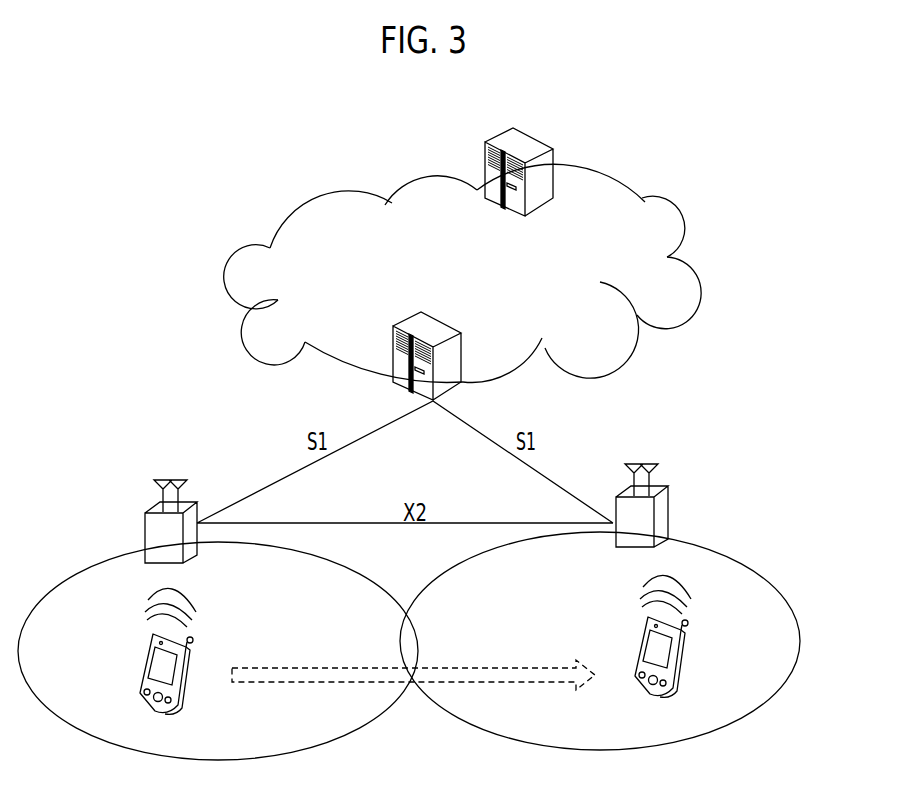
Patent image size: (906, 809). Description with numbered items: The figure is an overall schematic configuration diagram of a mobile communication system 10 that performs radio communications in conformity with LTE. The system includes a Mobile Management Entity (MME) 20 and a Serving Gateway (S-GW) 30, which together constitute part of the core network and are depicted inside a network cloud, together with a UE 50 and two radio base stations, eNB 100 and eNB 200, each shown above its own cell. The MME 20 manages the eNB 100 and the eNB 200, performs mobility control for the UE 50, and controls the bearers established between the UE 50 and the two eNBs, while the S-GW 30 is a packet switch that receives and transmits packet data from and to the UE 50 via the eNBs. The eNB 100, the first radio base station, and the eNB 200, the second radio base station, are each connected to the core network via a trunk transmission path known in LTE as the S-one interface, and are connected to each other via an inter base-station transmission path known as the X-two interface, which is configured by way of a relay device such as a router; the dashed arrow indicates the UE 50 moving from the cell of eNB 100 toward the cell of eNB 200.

The mobile communication system 10 is at (740, 152).
The Mobile Management Entity (MME) 20 is at (523, 141).
The Serving Gateway (S-GW) 30 is at (430, 328).
The UE 50 is at (198, 657).
The radio base station (eNB) 100 is at (150, 508).
The radio base station (eNB) 200 is at (670, 497).